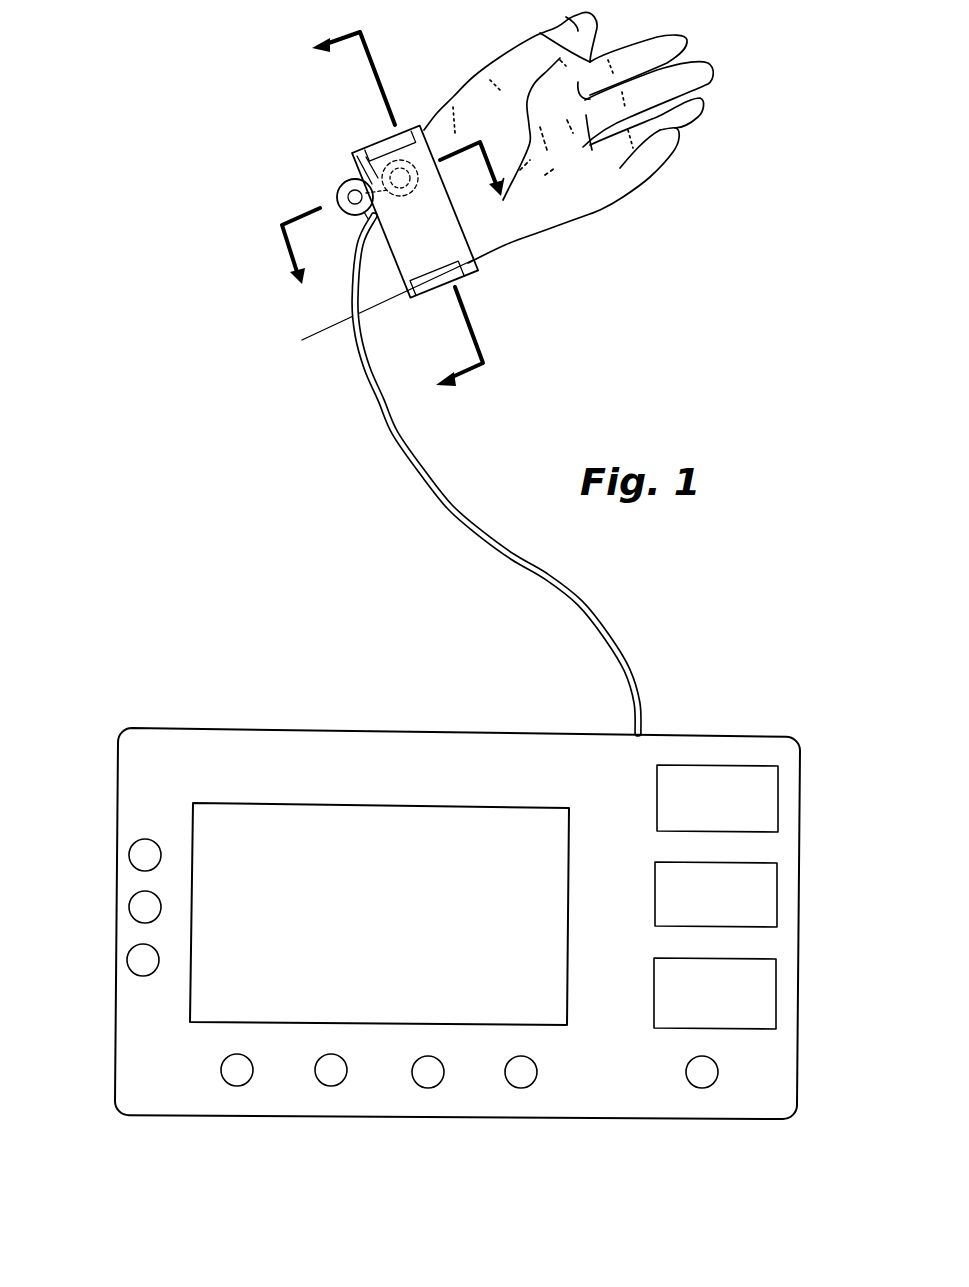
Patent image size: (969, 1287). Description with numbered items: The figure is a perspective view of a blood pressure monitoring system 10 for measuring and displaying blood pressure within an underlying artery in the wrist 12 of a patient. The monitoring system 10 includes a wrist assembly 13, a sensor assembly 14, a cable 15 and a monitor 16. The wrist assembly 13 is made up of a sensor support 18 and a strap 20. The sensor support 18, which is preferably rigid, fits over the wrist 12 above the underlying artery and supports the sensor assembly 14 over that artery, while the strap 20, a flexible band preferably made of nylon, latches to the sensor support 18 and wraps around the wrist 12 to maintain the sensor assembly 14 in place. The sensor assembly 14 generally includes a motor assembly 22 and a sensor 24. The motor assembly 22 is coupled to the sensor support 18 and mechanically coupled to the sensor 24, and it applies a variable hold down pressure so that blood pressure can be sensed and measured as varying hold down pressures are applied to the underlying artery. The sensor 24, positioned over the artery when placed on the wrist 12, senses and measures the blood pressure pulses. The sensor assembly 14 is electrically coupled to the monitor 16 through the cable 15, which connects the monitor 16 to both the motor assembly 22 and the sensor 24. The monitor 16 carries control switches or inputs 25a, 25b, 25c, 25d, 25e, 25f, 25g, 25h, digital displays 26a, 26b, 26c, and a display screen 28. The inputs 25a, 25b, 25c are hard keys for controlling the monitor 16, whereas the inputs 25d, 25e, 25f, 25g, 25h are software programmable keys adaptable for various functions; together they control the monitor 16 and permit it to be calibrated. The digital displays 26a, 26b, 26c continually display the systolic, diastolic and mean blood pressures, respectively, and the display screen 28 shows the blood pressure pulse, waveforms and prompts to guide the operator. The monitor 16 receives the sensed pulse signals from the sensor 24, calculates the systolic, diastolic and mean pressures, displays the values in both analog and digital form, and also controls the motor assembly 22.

The blood pressure monitoring system 10 is at (446, 585).
The wrist 12 is at (404, 300).
The wrist assembly 13 is at (428, 115).
The sensor assembly 14 is at (330, 185).
The cable 15 is at (376, 402).
The monitor 16 is at (235, 718).
The sensor support 18 is at (459, 226).
The strap 20 is at (380, 147).
The motor assembly 22 is at (352, 215).
The sensor 24 is at (352, 147).
The input 25a is at (140, 839).
The input 25b is at (138, 893).
The input 25c is at (134, 948).
The input 25d is at (230, 1087).
The input 25e is at (325, 1087).
The input 25f is at (422, 1089).
The input 25g is at (518, 1089).
The input 25h is at (701, 1089).
The digital display 26a is at (755, 787).
The digital display 26b is at (752, 887).
The digital display 26c is at (755, 995).
The display screen 28 is at (502, 828).